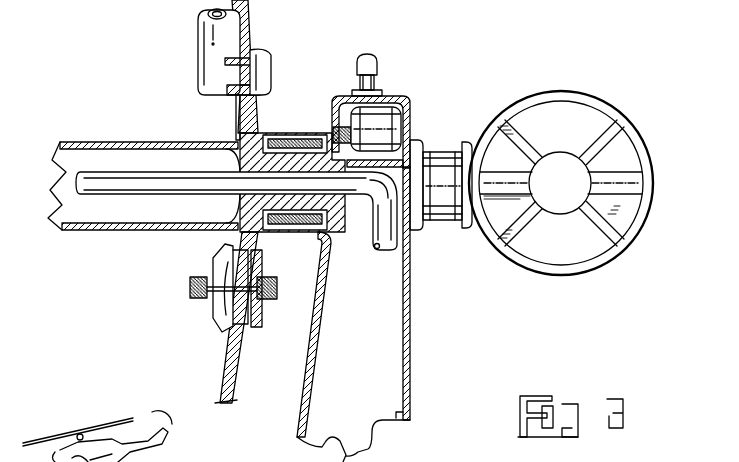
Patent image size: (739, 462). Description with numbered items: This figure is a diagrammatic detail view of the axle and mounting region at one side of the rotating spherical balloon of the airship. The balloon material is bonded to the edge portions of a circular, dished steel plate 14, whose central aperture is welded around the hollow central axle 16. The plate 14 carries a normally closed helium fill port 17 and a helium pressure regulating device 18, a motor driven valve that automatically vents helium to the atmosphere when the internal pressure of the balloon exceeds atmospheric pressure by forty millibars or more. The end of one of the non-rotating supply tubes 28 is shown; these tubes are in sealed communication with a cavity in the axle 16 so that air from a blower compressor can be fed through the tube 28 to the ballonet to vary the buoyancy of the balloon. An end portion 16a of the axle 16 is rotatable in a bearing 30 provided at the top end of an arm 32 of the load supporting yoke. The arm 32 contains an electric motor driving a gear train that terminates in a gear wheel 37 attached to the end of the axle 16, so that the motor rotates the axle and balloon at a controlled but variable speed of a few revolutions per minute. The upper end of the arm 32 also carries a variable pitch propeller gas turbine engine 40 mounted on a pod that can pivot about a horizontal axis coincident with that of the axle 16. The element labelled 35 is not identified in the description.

The dished steel plate 14 is at (257, 133).
The hollow central axle 16 is at (128, 257).
The end portions of the axle 16a is at (323, 152).
The helium fill port 17 is at (260, 60).
The helium pressure regulating device 18 is at (203, 316).
The non-rotating supply tubes 28 is at (168, 180).
The bearings 30 is at (300, 135).
The arms 32 is at (402, 414).
The solenoid 35 is at (380, 118).
The gear wheel 37 is at (326, 240).
The variable pitch propeller, gas turbine engines 40 is at (548, 90).